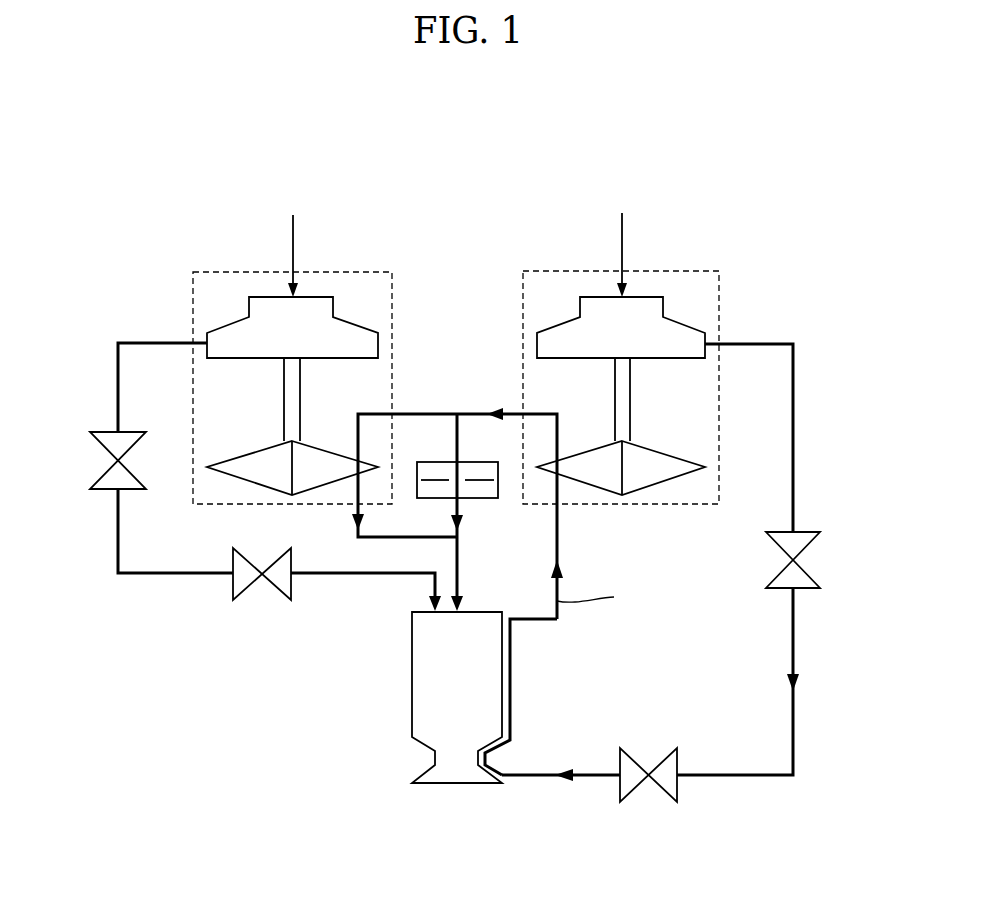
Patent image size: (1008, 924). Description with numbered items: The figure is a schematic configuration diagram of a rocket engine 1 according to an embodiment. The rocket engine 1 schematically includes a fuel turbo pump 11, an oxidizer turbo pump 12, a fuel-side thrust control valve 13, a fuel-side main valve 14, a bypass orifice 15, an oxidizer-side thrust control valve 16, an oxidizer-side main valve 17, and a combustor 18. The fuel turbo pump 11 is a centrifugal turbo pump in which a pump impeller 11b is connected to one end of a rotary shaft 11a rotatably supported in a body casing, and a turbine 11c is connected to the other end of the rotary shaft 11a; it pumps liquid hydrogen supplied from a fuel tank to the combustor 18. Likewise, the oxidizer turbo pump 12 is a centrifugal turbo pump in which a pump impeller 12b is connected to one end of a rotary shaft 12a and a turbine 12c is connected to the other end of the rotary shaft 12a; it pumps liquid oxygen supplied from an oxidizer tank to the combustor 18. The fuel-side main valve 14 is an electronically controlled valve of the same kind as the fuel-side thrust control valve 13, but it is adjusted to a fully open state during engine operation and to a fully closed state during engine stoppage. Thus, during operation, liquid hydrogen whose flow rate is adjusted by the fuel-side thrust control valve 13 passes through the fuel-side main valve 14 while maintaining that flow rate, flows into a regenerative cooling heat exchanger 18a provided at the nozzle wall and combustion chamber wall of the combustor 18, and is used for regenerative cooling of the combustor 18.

The rocket engine 1 is at (455, 170).
The fuel turbo pump 11 is at (556, 271).
The rotary shaft 11a is at (630, 400).
The pump impeller 11b is at (697, 322).
The turbine 11c is at (680, 477).
The oxidizer turbo pump 12 is at (372, 271).
The rotary shaft 12a is at (283, 410).
The pump impeller 12b is at (233, 322).
The turbine 12c is at (237, 477).
The fuel-side thrust control valve 13 is at (810, 572).
The fuel-side main valve 14 is at (665, 790).
The bypass orifice 15 is at (490, 500).
The oxidizer-side thrust control valve 16 is at (100, 472).
The oxidizer-side main valve 17 is at (272, 588).
The combustor 18 is at (412, 716).
The regenerative cooling heat exchanger 18a is at (512, 716).